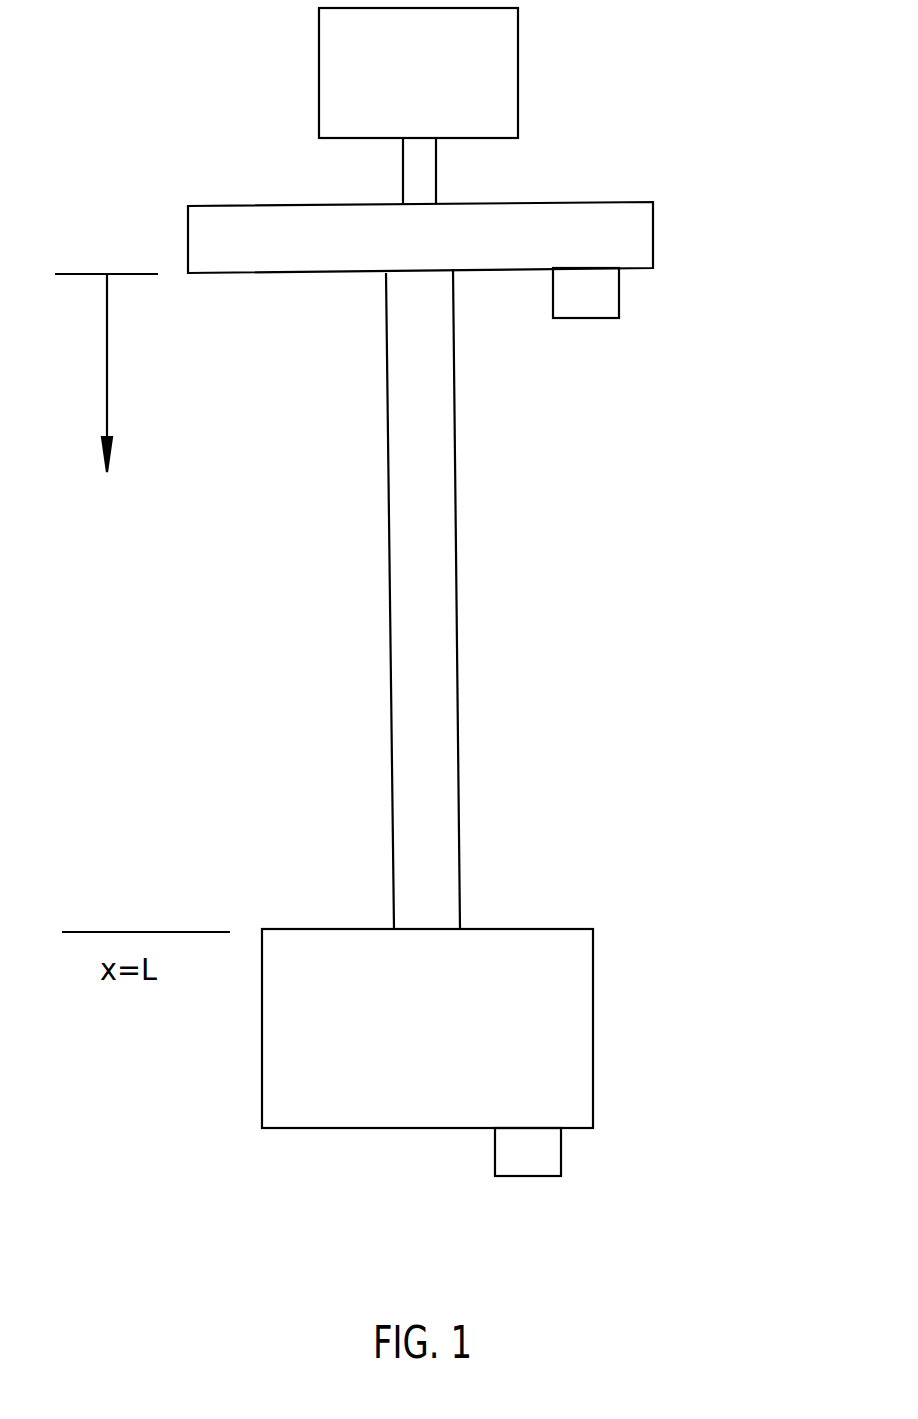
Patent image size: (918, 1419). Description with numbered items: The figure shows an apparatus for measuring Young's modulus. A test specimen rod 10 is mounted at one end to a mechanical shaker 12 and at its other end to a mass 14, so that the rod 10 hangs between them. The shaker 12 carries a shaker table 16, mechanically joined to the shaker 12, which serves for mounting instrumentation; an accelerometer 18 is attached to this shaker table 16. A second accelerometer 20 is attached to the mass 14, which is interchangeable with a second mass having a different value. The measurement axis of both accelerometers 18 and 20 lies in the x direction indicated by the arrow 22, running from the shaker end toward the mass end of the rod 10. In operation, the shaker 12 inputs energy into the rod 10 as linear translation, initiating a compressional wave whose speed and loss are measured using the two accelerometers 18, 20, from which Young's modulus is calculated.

The test specimen rod 10 is at (423, 600).
The mechanical shaker 12 is at (484, 58).
The mass 14 is at (527, 1027).
The shaker table 16 is at (586, 235).
The accelerometer 18 is at (587, 300).
The second accelerometer 20 is at (527, 1162).
The arrow 22 is at (107, 373).